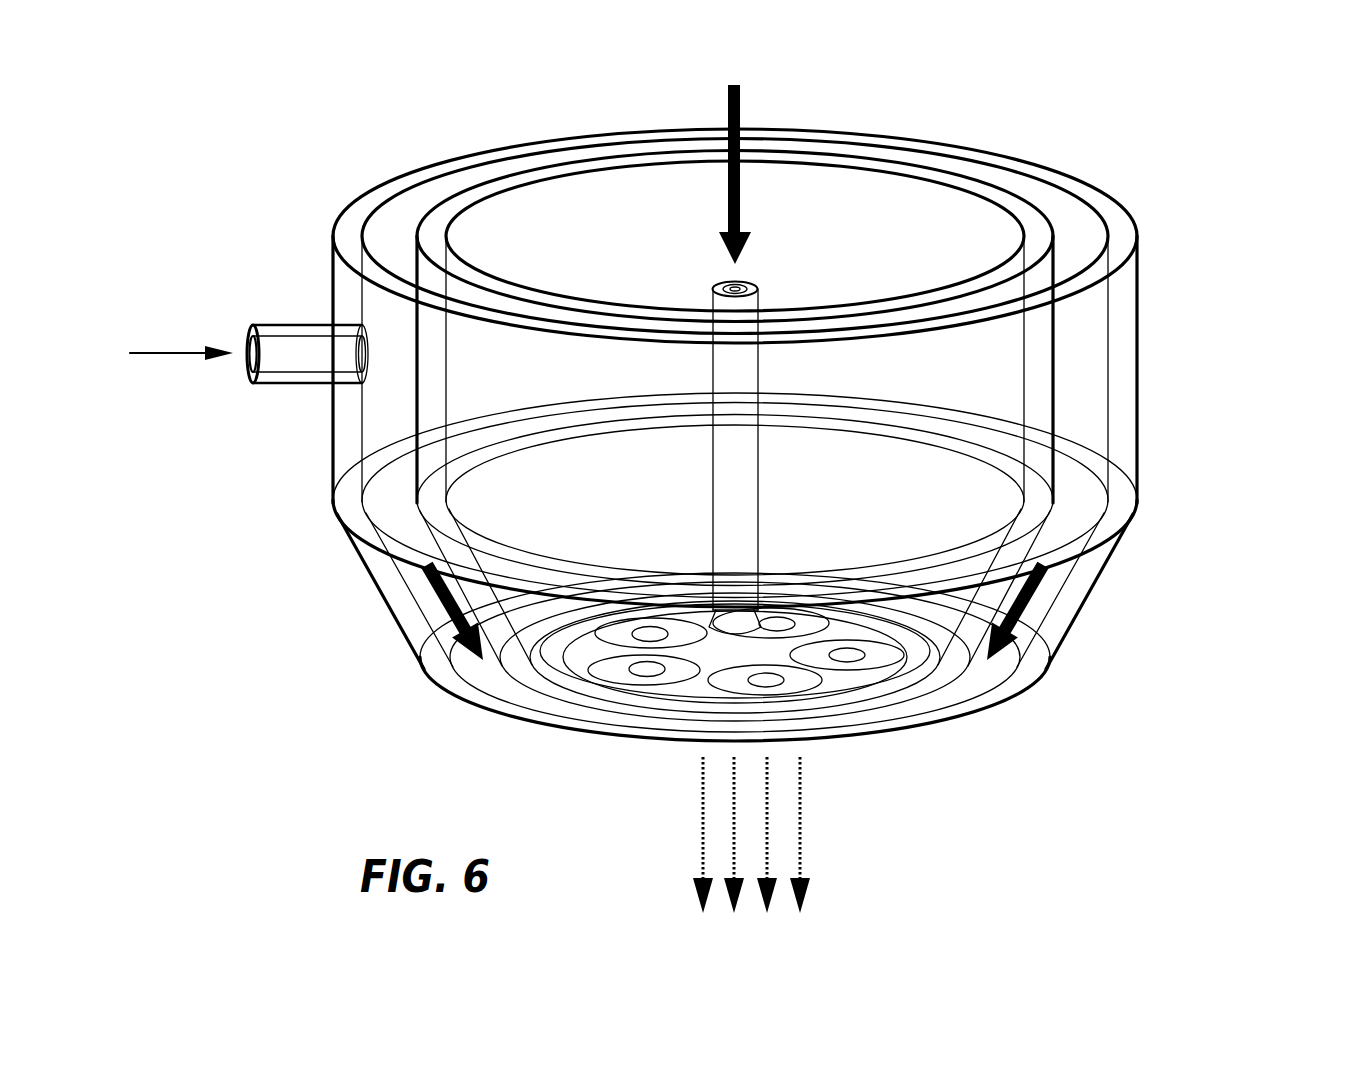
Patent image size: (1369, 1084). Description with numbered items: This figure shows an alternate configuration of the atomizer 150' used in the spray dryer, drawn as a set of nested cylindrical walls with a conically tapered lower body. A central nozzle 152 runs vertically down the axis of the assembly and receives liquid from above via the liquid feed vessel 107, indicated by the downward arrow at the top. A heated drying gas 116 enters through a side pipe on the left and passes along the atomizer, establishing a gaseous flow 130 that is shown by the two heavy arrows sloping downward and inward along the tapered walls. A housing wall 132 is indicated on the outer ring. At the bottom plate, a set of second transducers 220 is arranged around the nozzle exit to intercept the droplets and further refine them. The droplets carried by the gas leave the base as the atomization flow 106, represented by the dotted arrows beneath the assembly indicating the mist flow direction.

The atomizer 150' is at (700, 496).
The outer housing 132 is at (1073, 235).
The nozzle 152 is at (730, 367).
The second transducer 220 is at (770, 670).
The liquid feed vessel 107 is at (728, 101).
The drying gas 116 is at (164, 352).
The gaseous flow 130 is at (1157, 622).
The atomization flow 106 is at (1057, 681).